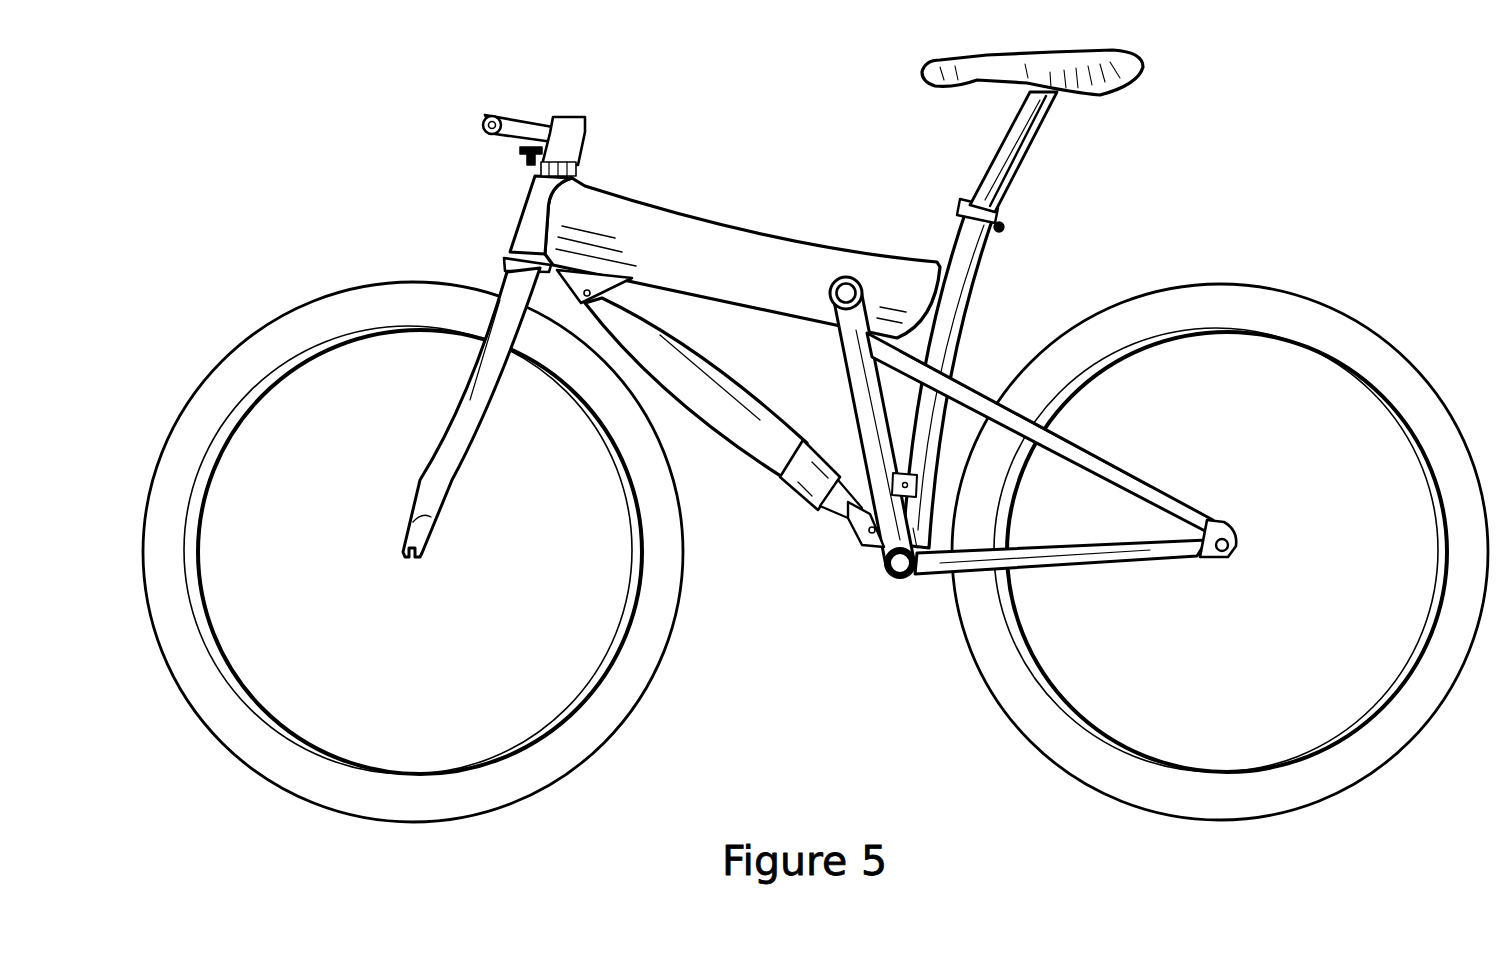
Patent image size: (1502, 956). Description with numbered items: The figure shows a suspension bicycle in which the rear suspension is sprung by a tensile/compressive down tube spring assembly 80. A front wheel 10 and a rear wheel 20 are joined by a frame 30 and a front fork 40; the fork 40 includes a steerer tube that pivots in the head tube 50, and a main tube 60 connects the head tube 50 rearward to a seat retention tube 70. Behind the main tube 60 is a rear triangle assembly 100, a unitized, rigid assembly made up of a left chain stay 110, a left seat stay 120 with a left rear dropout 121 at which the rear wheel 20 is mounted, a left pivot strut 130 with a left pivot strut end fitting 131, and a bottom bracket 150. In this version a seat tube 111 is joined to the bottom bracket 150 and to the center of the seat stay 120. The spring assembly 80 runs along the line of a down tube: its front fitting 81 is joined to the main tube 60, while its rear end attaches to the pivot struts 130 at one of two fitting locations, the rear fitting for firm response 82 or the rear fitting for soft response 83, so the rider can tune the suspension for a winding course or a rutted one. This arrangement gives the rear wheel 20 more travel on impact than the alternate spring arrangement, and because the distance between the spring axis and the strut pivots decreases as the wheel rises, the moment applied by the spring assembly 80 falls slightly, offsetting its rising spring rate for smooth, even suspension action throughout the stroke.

The front wheel 10 is at (246, 362).
The rear wheel 20 is at (1258, 305).
The frame 30 is at (722, 210).
The front fork 40 is at (504, 316).
The head tube 50 is at (533, 208).
The main tube 60 is at (780, 210).
The seat retention tube 70 is at (973, 218).
The down tube spring assembly 80 is at (768, 453).
The front fitting 81 is at (598, 292).
The rear fitting for firm response 82 is at (862, 538).
The rear fitting for soft response 83 is at (900, 475).
The rear triangle assembly 100 is at (980, 362).
The left chain stay 110 is at (1062, 552).
The seat tube 111 is at (916, 528).
The left seat stay 120 is at (1120, 472).
The left rear dropout 121 is at (1226, 524).
The left pivot strut 130 is at (862, 390).
The left pivot strut end fitting 131 is at (838, 317).
The bottom bracket 150 is at (883, 570).